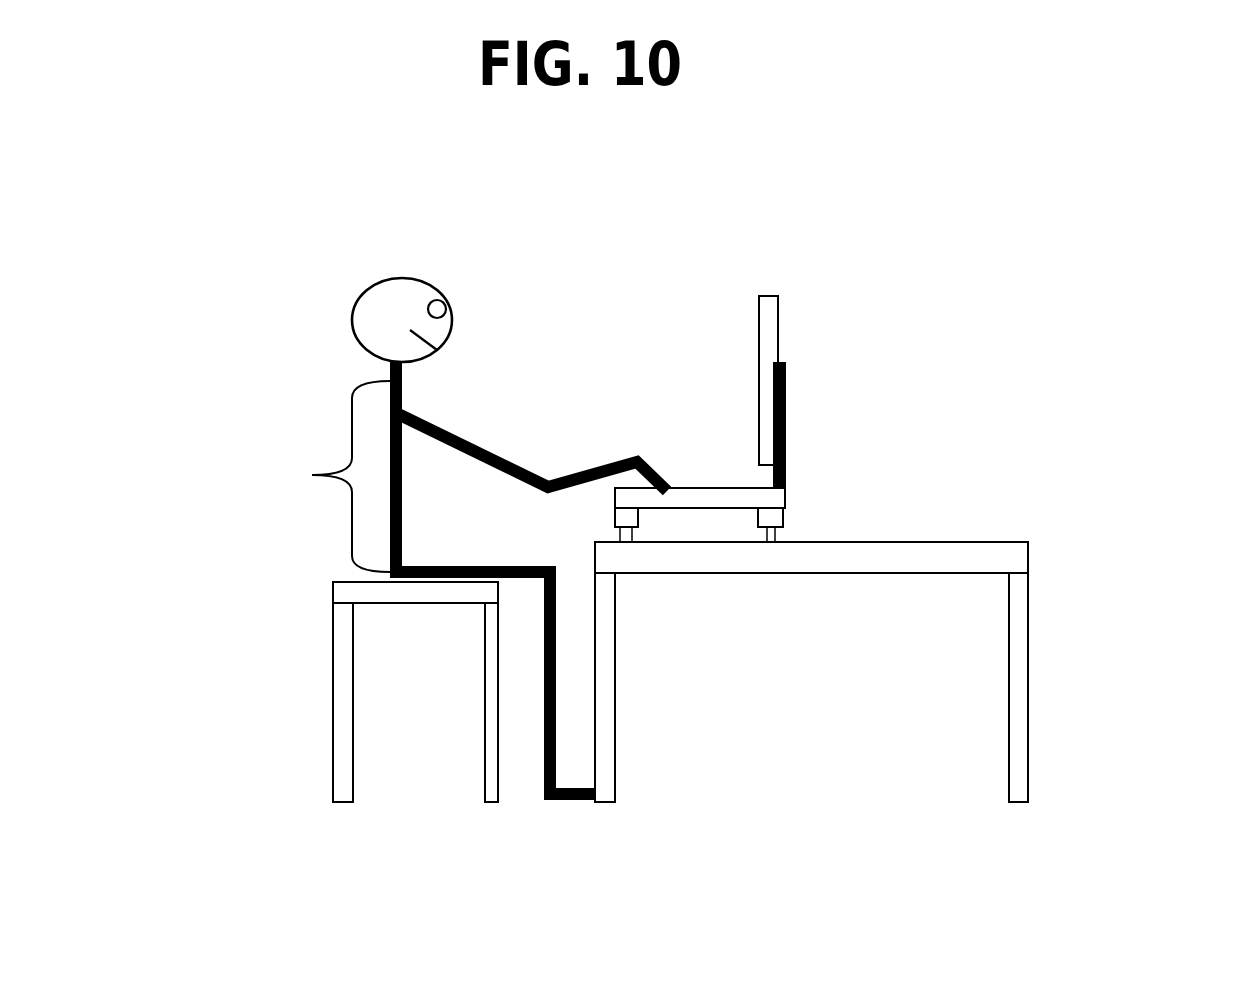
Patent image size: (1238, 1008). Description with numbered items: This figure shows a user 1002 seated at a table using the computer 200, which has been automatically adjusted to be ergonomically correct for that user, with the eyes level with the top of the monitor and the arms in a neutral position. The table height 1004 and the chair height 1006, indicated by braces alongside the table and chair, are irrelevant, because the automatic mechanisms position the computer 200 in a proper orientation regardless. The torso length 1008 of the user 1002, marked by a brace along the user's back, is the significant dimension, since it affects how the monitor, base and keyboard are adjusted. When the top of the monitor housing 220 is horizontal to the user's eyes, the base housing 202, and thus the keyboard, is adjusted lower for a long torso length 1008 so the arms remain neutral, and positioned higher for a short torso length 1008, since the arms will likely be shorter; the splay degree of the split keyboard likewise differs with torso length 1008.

The computer 200 is at (812, 371).
The base housing 202 is at (775, 498).
The monitor housing 220 is at (767, 322).
The user 1002 is at (312, 297).
The table height 1004 is at (1028, 542).
The chair height 1006 is at (332, 583).
The torso length 1008 is at (307, 476).